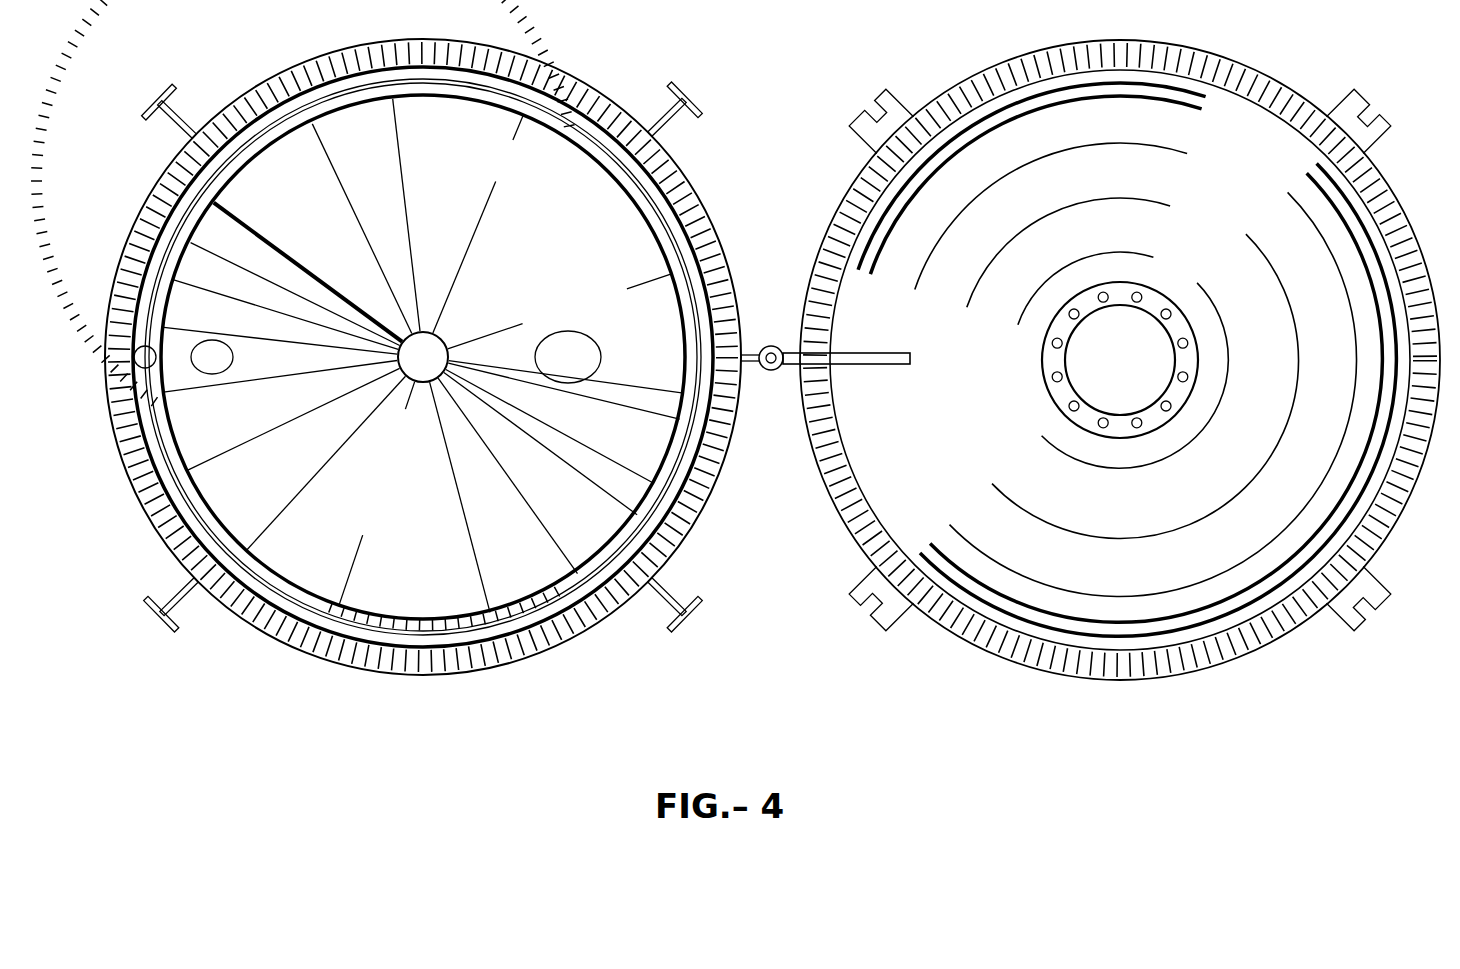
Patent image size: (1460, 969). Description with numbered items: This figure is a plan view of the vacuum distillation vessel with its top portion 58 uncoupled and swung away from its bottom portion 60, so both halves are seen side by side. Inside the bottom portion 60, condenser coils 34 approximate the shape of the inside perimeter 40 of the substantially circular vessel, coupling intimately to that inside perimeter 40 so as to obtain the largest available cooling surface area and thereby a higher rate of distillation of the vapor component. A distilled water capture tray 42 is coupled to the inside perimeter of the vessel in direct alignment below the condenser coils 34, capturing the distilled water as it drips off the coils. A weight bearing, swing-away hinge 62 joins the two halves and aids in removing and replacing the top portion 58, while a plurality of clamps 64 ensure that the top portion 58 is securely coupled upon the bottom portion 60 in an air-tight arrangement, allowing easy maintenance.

The condenser coils 34 is at (183, 492).
The inside perimeter 40 is at (611, 178).
The distilled water capture tray 42 is at (513, 610).
The top portion 58 is at (1003, 693).
The bottom portion 60 is at (328, 693).
The swing-away hinge 62 is at (862, 365).
The clamps 64 is at (848, 598).